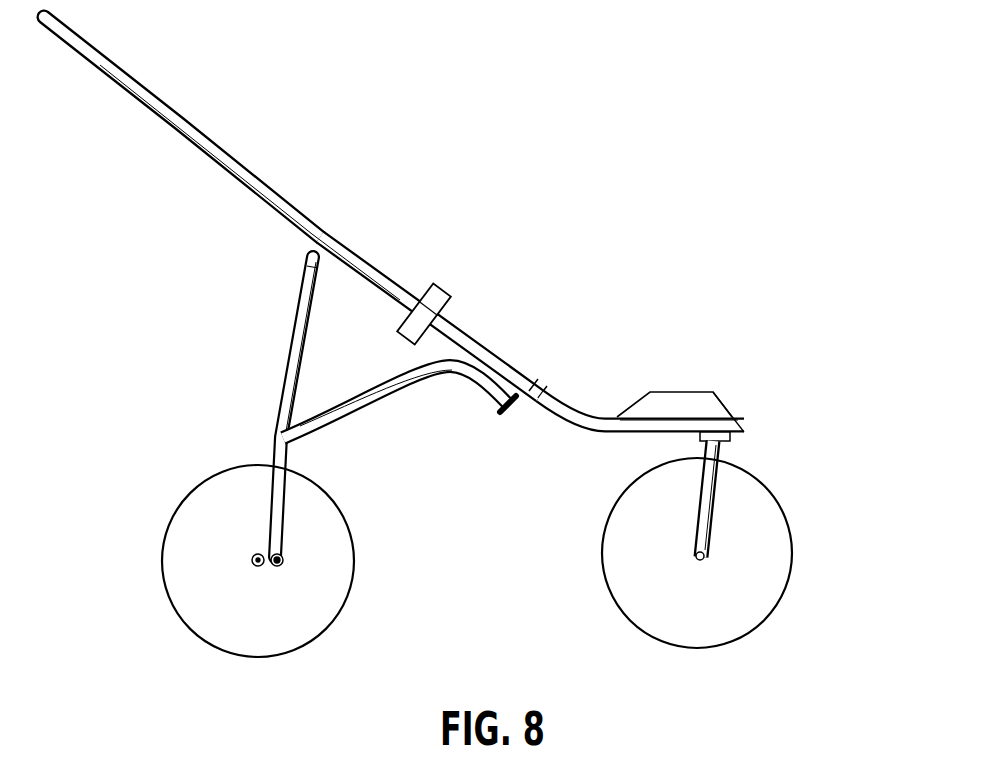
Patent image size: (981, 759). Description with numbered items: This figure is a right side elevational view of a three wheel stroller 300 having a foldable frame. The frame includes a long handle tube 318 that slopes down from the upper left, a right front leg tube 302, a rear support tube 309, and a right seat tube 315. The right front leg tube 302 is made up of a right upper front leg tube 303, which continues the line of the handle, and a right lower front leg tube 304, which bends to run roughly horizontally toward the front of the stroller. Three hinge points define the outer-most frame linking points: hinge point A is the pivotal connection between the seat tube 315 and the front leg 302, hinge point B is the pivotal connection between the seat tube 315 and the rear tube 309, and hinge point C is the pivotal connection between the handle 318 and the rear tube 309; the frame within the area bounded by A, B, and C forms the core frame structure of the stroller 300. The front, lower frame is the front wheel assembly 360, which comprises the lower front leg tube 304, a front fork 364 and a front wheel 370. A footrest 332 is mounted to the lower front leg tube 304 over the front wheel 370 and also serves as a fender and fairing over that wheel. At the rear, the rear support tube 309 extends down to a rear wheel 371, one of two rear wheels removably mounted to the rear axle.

The three wheel stroller 300 is at (533, 223).
The right front leg tube 302 is at (557, 353).
The right upper front leg tube 303 is at (478, 336).
The right lower front leg tube 304 is at (587, 415).
The rear support tube 309 is at (283, 363).
The right seat tube 315 is at (357, 398).
The handle tube 318 is at (230, 158).
The footrest 332 is at (730, 400).
The front wheel assembly 360 is at (723, 347).
The front fork 364 is at (727, 443).
The front wheel 370 is at (793, 547).
The right rear wheel 371 is at (162, 577).
The hinge point A is at (498, 405).
The hinge point B is at (267, 433).
The hinge point C is at (332, 238).